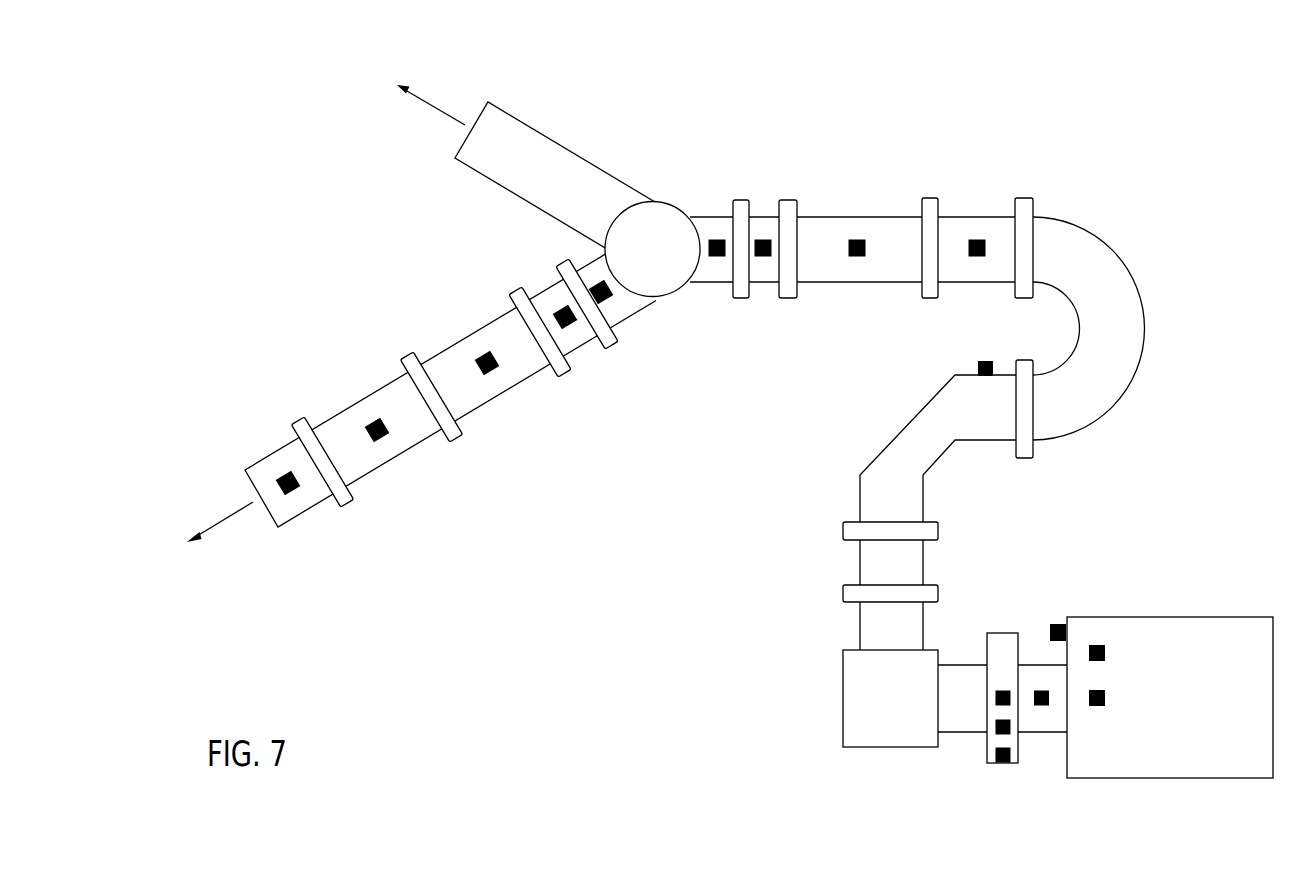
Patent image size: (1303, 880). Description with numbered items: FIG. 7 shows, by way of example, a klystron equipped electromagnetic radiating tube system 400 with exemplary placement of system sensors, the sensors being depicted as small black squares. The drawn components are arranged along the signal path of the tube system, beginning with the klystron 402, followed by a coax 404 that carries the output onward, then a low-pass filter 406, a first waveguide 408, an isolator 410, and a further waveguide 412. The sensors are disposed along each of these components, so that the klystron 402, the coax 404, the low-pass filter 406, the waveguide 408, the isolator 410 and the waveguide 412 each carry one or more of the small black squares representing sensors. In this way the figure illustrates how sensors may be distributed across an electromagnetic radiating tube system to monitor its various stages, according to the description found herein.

The klystron equipped electromagnetic radiating tube system 400 is at (1045, 135).
The klystron 402 is at (1177, 617).
The coax 404 is at (1033, 665).
The low-pass filter 406 is at (1000, 633).
The waveguide 408 is at (1135, 280).
The isolator 410 is at (857, 216).
The waveguide 412 is at (487, 402).